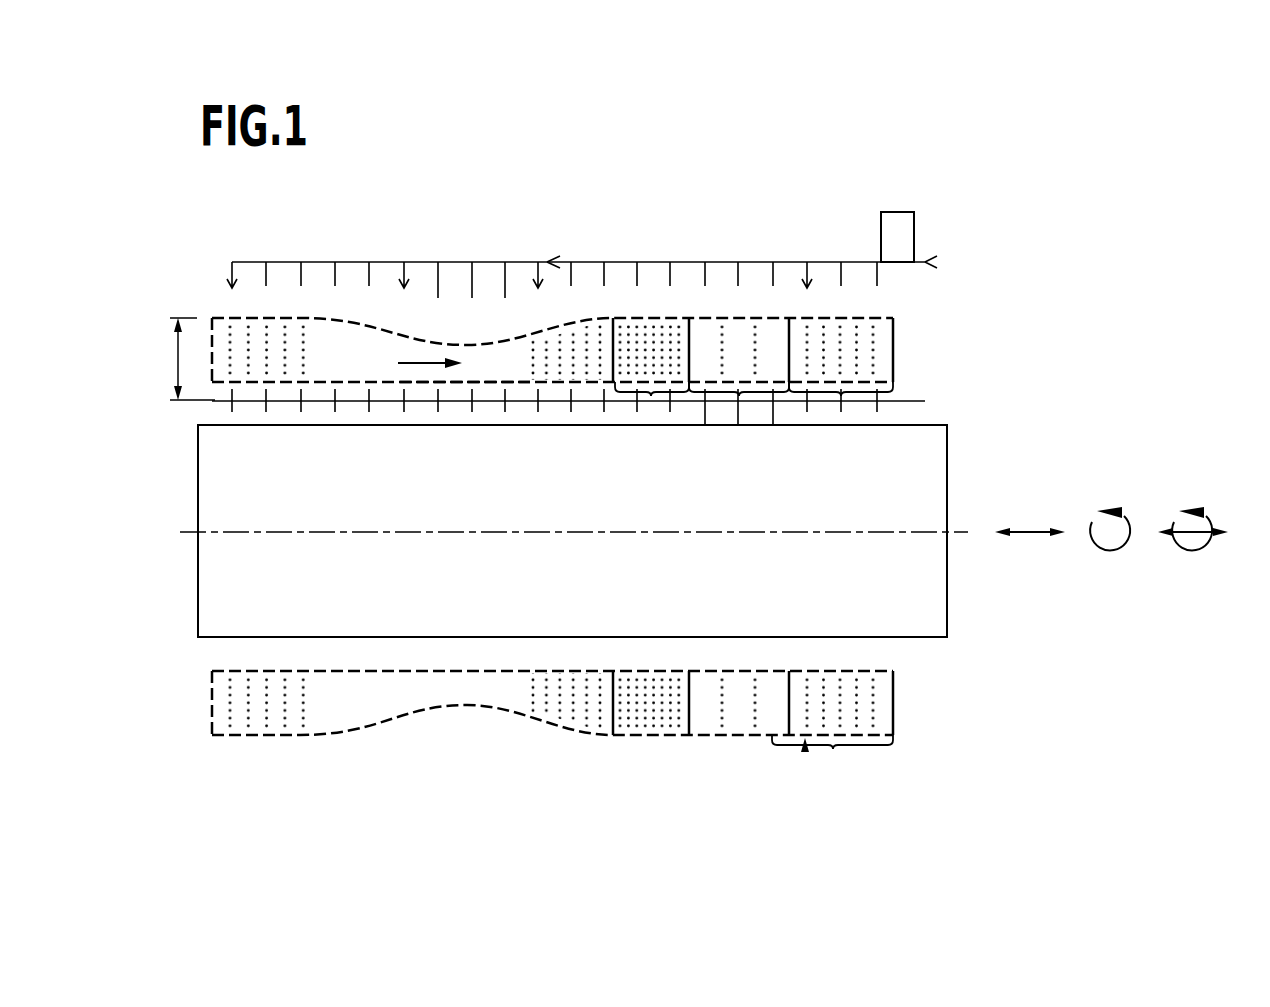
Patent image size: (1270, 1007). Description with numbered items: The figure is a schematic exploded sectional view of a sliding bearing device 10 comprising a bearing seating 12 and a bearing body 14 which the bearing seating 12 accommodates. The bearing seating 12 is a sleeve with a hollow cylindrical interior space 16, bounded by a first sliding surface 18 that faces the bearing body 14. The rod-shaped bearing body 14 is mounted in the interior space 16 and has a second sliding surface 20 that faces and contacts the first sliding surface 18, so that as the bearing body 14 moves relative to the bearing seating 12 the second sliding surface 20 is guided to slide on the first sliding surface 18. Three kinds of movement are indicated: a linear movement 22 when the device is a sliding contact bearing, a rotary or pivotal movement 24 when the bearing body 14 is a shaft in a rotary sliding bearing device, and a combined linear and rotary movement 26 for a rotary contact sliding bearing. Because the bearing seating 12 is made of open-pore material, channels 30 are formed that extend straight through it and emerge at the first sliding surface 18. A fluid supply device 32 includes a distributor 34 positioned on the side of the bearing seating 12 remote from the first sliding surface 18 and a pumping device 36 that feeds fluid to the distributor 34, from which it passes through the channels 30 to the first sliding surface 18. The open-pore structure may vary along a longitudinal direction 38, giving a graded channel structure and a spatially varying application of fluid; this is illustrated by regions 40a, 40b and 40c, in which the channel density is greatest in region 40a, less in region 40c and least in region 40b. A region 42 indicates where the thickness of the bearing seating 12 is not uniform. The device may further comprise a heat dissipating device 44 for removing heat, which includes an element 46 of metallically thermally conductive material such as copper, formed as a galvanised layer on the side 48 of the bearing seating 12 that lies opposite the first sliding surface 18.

The sliding bearing device 10 is at (651, 162).
The bearing seating 12 is at (893, 350).
The bearing body 14 is at (225, 460).
The interior space 16 is at (213, 392).
The first sliding surface 18 is at (872, 382).
The second sliding surface 20 is at (217, 423).
The linear movement 22 is at (1032, 532).
The rotary or pivotal movement 24 is at (1111, 552).
The combined linear and rotary movement 26 is at (1193, 552).
The channels 30 is at (722, 338).
The fluid supply device 32 is at (902, 208).
The distributor 34 is at (350, 262).
The pumping device 36 is at (900, 237).
The direction 38 is at (417, 363).
The region 40a is at (651, 395).
The region 40b is at (739, 395).
The region 40c is at (841, 395).
The region of non-uniform thickness 42 is at (462, 382).
The heat dissipating device 44 is at (805, 745).
The element 46 is at (833, 748).
The side 48 is at (260, 735).